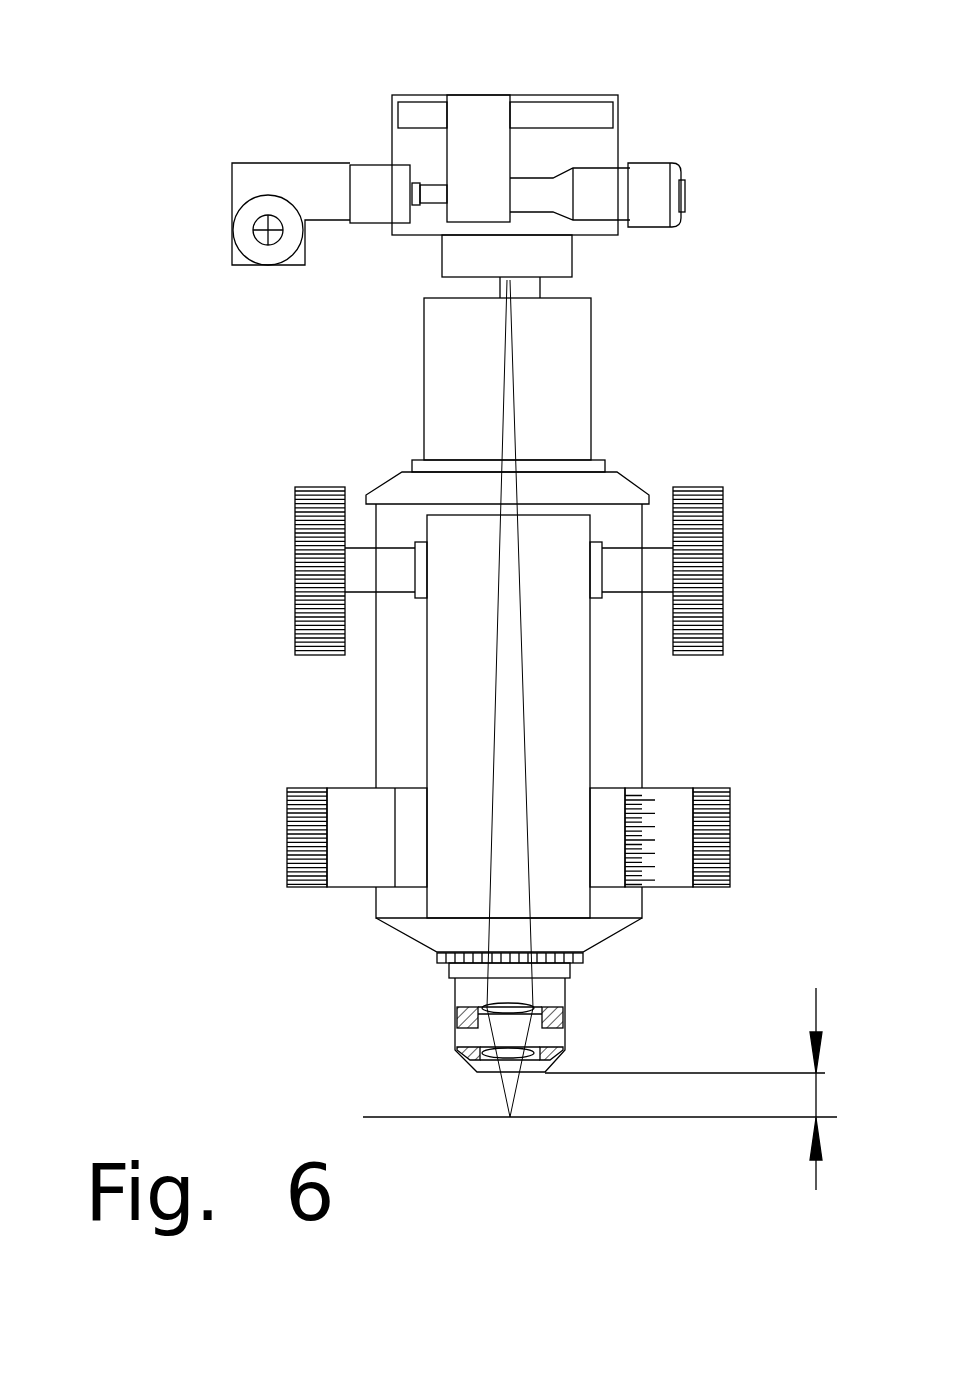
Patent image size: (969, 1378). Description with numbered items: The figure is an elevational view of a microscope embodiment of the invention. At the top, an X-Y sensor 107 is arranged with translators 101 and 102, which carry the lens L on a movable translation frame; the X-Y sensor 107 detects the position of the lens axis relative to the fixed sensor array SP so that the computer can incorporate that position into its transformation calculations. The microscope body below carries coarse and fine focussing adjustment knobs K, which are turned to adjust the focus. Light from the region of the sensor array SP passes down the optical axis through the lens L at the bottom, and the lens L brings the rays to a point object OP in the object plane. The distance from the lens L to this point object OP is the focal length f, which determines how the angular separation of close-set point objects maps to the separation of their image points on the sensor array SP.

The translator 101 is at (268, 255).
The translator 102 is at (652, 218).
The X-Y sensor 107 is at (417, 115).
The sensor array SP is at (540, 283).
The coarse and fine focussing adjustment knobs K is at (735, 827).
The lens L is at (570, 1025).
The point object OP is at (502, 1113).
The focal length f is at (685, 1089).